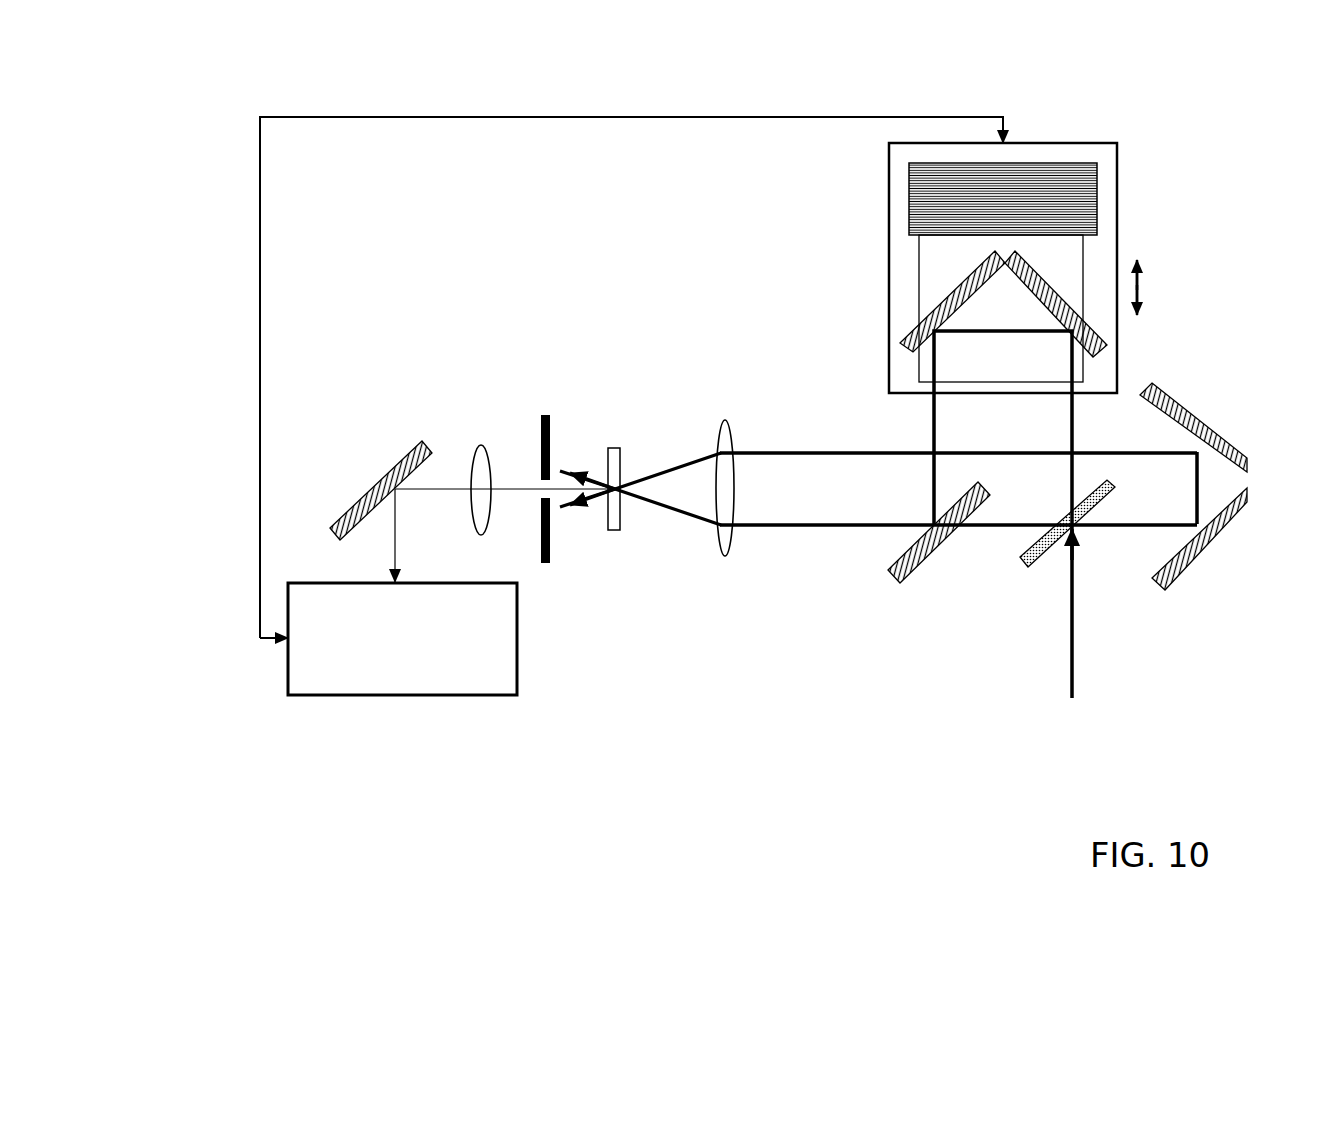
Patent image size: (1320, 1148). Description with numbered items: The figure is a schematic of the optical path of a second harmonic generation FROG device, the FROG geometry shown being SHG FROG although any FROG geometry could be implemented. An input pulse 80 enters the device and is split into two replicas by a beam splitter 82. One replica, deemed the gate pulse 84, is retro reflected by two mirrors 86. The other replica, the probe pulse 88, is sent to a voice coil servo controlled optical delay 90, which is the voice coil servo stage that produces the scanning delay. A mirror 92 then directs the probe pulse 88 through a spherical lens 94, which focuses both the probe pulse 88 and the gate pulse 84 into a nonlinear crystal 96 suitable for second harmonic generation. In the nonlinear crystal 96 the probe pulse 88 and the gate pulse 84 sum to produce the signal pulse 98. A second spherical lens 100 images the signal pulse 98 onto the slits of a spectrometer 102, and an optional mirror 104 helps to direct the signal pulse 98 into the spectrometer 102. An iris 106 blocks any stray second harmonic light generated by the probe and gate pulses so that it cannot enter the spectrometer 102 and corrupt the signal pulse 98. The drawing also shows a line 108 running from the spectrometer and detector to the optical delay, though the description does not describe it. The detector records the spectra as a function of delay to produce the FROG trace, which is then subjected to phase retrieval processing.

The input pulse 80 is at (1083, 635).
The beam splitter 82 is at (1027, 578).
The gate pulse 84 is at (807, 443).
The mirrors 86 is at (1190, 407).
The probe pulse 88 is at (798, 540).
The voice coil servo controlled optical delay 90 is at (888, 268).
The mirror 92 is at (900, 597).
The spherical lens 94 is at (727, 567).
The nonlinear crystal 96 is at (612, 440).
The signal pulse 98 is at (518, 482).
The spherical lens 100 is at (475, 433).
The spectrometer 102 is at (532, 647).
The optional mirror 104 is at (388, 457).
The iris 106 is at (543, 403).
The feedback control line 108 is at (262, 138).